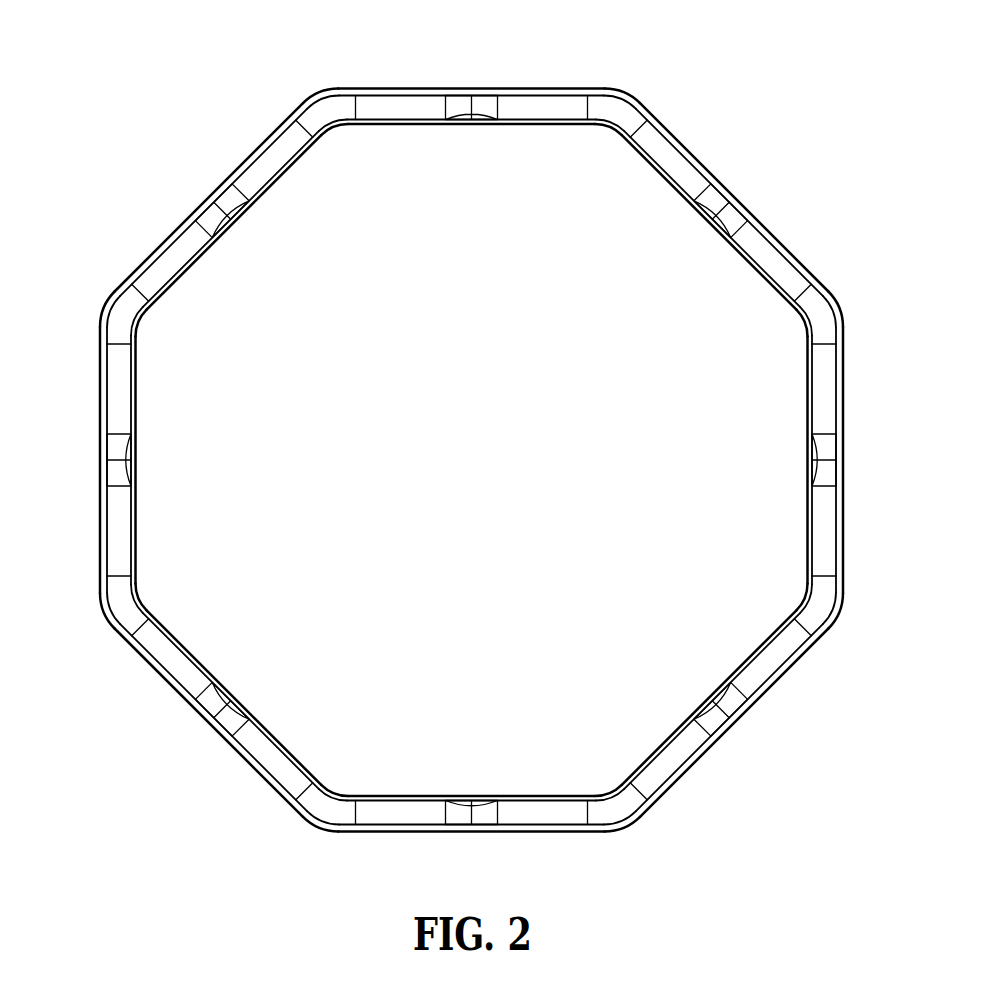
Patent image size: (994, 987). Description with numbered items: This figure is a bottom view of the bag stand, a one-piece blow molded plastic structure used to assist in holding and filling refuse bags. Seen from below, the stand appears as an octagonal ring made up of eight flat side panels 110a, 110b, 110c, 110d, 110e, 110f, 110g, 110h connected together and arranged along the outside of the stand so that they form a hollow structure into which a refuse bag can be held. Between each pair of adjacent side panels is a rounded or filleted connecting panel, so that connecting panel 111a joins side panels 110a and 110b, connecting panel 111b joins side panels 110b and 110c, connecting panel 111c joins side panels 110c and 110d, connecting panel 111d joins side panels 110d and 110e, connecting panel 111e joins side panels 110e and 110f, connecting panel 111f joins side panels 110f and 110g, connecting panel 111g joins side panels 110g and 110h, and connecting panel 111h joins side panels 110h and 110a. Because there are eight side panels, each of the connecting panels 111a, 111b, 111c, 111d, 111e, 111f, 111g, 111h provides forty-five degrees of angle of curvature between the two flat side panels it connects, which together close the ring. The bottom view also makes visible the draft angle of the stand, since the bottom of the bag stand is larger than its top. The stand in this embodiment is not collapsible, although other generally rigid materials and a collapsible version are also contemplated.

The side panel 110a is at (556, 104).
The side panel 110b is at (675, 158).
The side panel 110c is at (828, 382).
The side panel 110d is at (776, 682).
The side panel 110e is at (538, 812).
The side panel 110f is at (268, 760).
The side panel 110g is at (138, 530).
The side panel 110h is at (178, 252).
The connecting panel 111a is at (620, 103).
The connecting panel 111b is at (823, 320).
The connecting panel 111c is at (820, 613).
The connecting panel 111d is at (630, 817).
The connecting panel 111e is at (338, 807).
The connecting panel 111f is at (118, 596).
The connecting panel 111g is at (118, 317).
The connecting panel 111h is at (332, 104).